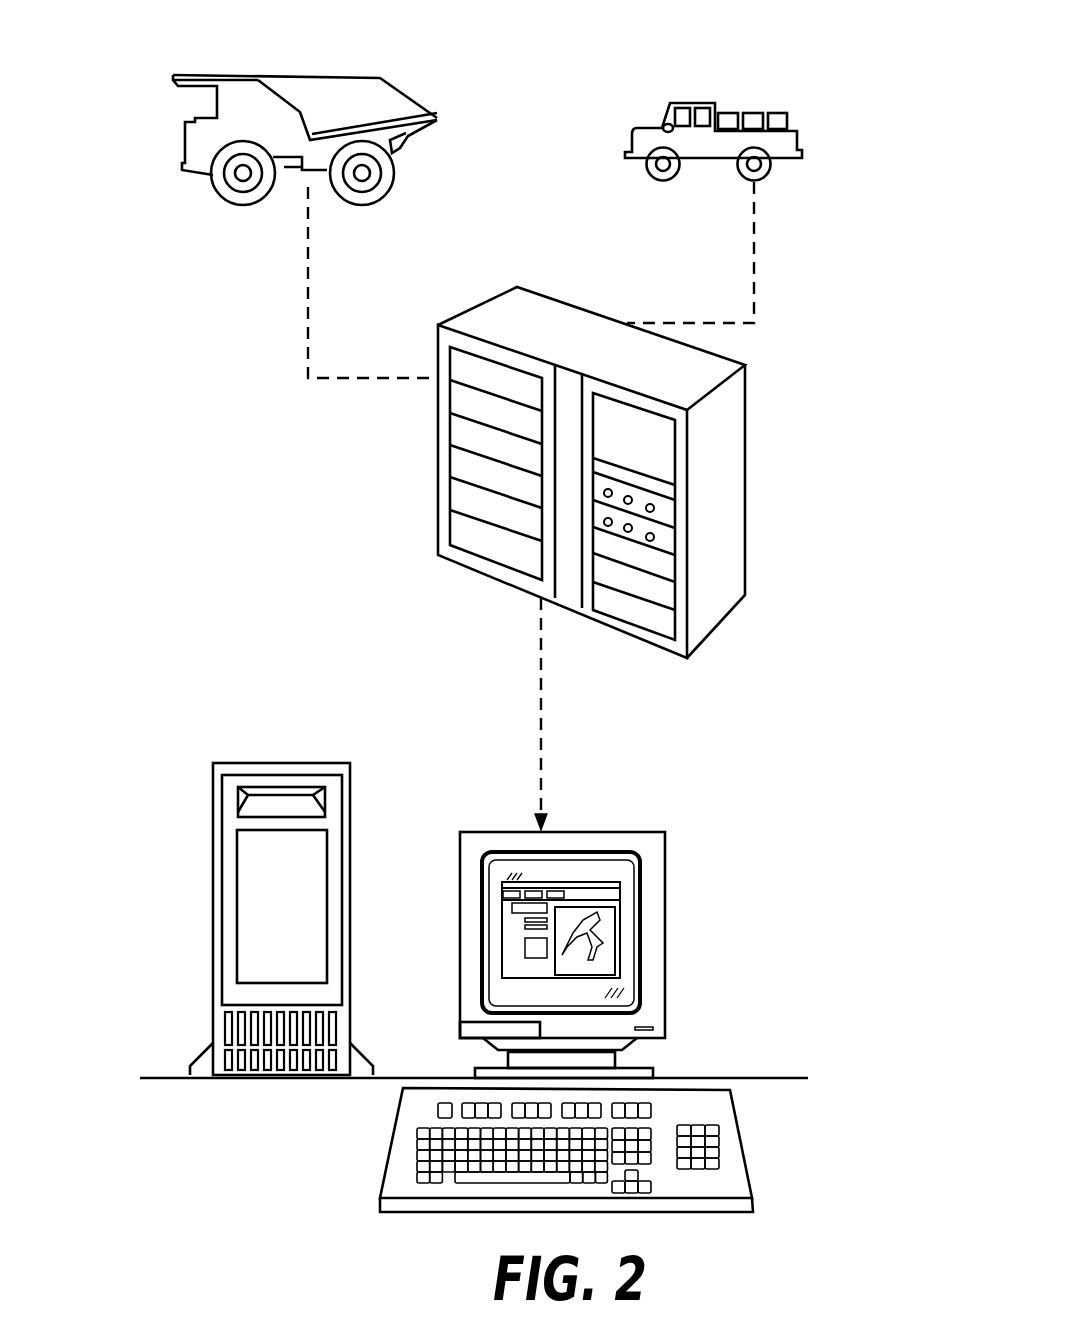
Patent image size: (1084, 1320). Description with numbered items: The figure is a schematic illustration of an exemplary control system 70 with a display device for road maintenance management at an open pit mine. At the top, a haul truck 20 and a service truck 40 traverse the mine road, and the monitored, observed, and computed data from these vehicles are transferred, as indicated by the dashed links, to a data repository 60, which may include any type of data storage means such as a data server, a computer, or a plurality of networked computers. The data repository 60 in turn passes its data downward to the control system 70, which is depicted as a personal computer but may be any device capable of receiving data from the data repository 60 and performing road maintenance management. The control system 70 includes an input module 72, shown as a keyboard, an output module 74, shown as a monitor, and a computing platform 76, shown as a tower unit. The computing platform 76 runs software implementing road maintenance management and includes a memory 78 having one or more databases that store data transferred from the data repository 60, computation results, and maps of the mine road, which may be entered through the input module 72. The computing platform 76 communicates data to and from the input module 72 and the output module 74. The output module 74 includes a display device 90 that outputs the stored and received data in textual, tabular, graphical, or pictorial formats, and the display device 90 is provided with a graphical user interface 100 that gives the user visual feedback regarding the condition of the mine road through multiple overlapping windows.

The haul truck 20 is at (323, 103).
The service truck 40 is at (698, 103).
The data repository 60 is at (735, 452).
The control system 70 is at (480, 948).
The input module 72 is at (705, 1110).
The output module 74 is at (614, 920).
The computing platform 76 is at (268, 879).
The memory 78 is at (240, 1013).
The display device 90 is at (635, 910).
The graphical user interface 100 is at (617, 943).